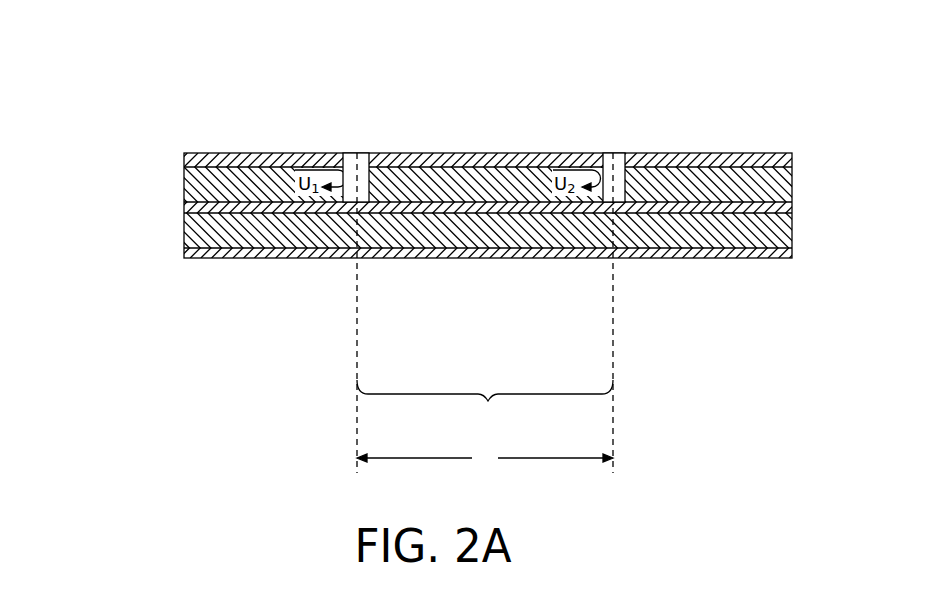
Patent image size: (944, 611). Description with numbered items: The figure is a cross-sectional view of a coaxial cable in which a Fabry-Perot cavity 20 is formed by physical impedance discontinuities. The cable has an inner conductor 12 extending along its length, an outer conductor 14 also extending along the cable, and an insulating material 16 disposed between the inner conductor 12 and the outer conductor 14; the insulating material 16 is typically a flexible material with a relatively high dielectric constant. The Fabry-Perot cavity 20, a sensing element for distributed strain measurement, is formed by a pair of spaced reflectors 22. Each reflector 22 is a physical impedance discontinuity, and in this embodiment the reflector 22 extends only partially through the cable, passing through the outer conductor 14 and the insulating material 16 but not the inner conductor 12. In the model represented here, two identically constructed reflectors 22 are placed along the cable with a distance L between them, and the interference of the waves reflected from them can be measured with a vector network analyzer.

The inner conductor 12 is at (207, 207).
The outer conductor 14 is at (204, 153).
The insulating material 16 is at (436, 226).
The Fabry-Perot cavity 20 is at (557, 403).
The reflector 22 is at (617, 155).